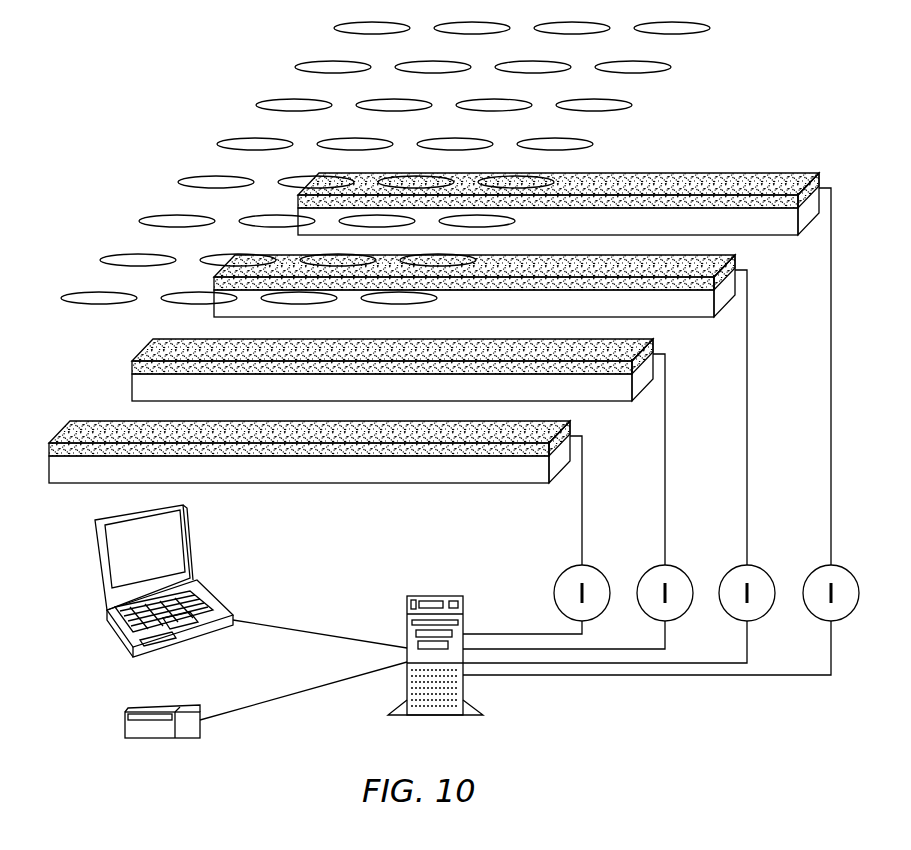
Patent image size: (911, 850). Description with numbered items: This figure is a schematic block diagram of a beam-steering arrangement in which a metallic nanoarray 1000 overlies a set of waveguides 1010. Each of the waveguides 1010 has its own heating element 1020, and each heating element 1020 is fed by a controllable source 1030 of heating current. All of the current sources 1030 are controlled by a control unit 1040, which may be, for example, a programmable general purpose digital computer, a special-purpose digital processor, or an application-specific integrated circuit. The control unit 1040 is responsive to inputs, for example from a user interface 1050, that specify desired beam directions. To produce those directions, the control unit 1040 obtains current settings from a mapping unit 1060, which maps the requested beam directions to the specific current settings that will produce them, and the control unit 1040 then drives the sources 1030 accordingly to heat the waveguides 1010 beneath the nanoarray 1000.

The metallic nanoarray 1000 is at (692, 72).
The waveguides 1010 is at (131, 384).
The heating element 1020 is at (88, 433).
The controllable source of heating current 1030 is at (554, 592).
The control unit 1040 is at (406, 688).
The user interface 1050 is at (101, 572).
The mapping unit 1060 is at (125, 726).